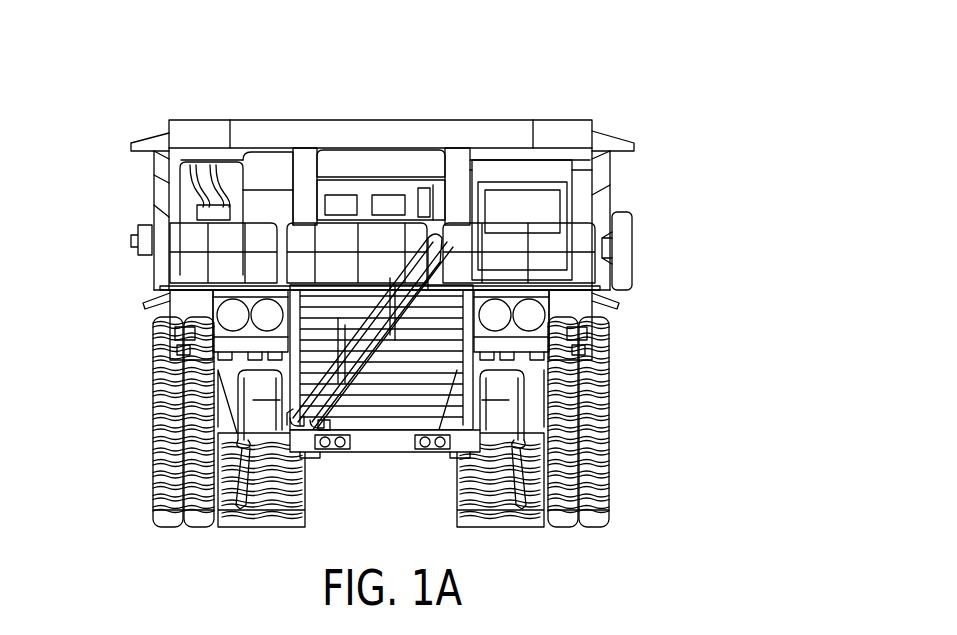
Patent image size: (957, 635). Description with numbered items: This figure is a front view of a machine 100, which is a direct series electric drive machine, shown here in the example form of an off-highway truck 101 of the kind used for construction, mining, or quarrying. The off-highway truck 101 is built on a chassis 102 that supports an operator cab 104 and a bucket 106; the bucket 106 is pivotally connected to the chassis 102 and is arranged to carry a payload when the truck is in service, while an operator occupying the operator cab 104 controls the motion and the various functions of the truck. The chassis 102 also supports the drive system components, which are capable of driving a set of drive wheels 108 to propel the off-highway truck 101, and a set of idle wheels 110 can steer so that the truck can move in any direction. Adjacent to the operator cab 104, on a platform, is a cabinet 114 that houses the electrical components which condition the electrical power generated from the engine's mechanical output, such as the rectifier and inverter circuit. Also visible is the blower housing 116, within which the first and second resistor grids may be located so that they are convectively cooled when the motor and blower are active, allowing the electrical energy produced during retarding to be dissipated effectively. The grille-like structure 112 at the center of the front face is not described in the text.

The machine 100 is at (577, 89).
The off-highway truck 101 is at (117, 293).
The chassis 102 is at (353, 452).
The operator cab 104 is at (530, 214).
The bucket 106 is at (262, 133).
The drive wheels 108 is at (168, 437).
The idle wheels 110 is at (556, 437).
The radiator grille 112 is at (385, 400).
The cabinet 114 is at (387, 190).
The blower housing 116 is at (190, 210).